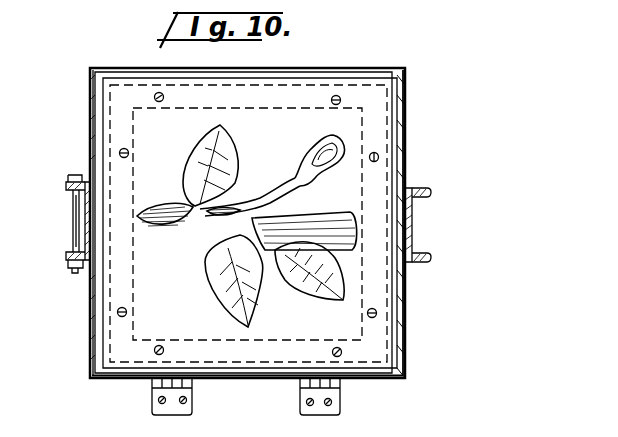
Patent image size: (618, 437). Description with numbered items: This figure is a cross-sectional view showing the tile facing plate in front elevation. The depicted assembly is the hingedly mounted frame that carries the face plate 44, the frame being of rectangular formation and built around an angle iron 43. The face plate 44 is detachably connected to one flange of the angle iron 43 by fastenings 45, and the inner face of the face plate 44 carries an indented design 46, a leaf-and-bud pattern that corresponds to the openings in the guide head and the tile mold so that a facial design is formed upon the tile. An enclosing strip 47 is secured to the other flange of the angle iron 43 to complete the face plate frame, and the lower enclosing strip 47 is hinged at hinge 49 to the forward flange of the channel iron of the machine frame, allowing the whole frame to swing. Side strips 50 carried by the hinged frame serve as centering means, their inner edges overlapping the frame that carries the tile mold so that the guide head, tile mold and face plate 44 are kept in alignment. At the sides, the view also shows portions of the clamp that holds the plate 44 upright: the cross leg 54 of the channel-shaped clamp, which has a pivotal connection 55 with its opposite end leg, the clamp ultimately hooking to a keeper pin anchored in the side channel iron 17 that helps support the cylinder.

The channel iron 17 is at (66, 257).
The angle iron 43 is at (212, 93).
The face plate 44 is at (137, 318).
The detachable connection 45 is at (160, 102).
The indented design 46 is at (234, 228).
The enclosing strip 47 is at (122, 68).
The hinge 49 is at (300, 388).
The side strips 50 is at (89, 304).
The cross leg 54 is at (410, 191).
The pivotal connection 55 is at (72, 213).